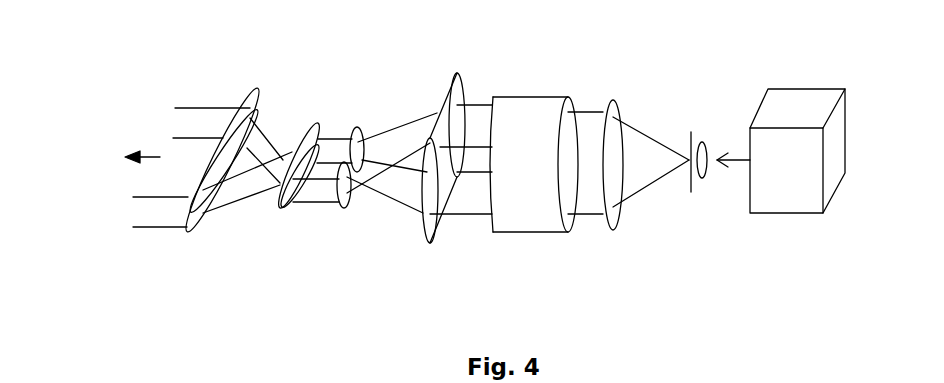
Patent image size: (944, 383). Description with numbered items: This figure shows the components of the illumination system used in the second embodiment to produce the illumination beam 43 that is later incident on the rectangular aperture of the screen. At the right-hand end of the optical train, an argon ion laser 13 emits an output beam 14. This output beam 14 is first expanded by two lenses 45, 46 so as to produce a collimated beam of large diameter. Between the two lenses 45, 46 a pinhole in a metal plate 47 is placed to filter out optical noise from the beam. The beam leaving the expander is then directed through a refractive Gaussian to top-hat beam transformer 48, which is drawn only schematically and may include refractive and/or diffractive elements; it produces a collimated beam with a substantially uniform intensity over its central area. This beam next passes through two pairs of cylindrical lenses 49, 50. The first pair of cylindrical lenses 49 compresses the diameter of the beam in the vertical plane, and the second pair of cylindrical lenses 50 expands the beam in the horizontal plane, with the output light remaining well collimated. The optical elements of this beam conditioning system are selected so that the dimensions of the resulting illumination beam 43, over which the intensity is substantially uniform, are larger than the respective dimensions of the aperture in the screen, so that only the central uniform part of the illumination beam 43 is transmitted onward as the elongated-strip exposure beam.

The argon ion laser 13 is at (800, 213).
The output beam 14 is at (733, 167).
The illumination beam 43 is at (161, 167).
The lens 45 is at (710, 143).
The lens 46 is at (612, 107).
The metal plate with pinhole 47 is at (690, 192).
The refractive Gaussian to top-hat beam transformer 48 is at (518, 232).
The first pair of cylindrical lenses 49 is at (437, 266).
The second pair of cylindrical lenses 50 is at (290, 268).